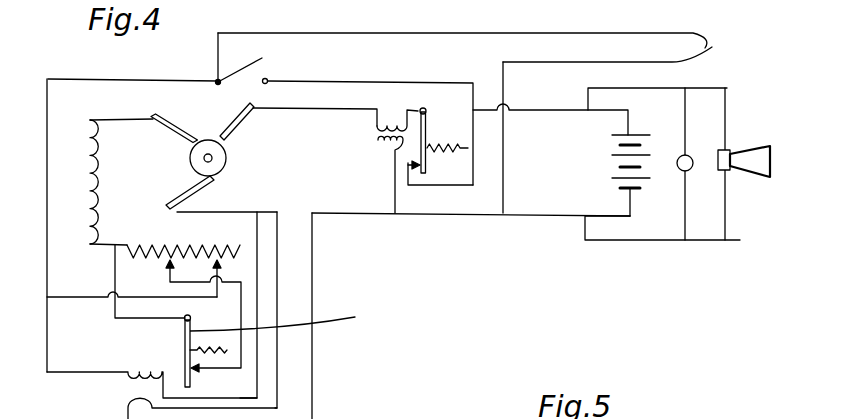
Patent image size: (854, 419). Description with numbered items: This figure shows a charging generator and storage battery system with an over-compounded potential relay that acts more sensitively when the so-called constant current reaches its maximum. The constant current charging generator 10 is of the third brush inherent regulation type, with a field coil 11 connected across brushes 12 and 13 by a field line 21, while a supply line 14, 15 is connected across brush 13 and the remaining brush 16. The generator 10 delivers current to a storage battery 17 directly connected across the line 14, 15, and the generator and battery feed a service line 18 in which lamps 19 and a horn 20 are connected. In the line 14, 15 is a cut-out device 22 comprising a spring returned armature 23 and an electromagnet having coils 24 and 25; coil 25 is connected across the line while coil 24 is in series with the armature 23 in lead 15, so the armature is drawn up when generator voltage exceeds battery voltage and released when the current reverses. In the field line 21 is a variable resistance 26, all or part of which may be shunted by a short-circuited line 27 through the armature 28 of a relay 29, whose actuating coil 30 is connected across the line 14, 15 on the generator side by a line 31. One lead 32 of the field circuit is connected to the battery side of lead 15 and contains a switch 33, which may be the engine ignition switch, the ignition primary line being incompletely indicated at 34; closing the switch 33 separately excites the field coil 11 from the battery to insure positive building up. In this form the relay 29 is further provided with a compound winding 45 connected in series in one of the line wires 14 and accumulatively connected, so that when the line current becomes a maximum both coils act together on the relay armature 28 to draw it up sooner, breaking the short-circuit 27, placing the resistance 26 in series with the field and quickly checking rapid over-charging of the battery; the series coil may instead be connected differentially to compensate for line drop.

The charging generator 10 is at (226, 160).
The field coil 11 is at (100, 155).
The brush 12 is at (170, 122).
The brush 13 is at (238, 124).
The supply line 14 is at (422, 214).
The supply line 15 is at (348, 113).
The brush 16 is at (197, 190).
The storage battery 17 is at (615, 155).
The service line 18 is at (643, 90).
The lamps 19 is at (695, 153).
The horn 20 is at (757, 157).
The field line 21 is at (97, 244).
The cut-out device 22 is at (410, 133).
The armature 23 is at (418, 172).
The coil 24 is at (397, 120).
The coil 25 is at (378, 140).
The variable resistance 26 is at (192, 248).
The short-circuited line 27 is at (115, 277).
The armature 28 is at (286, 316).
The relay 29 is at (175, 365).
The actuating coil 30 is at (163, 372).
The line 31 is at (47, 333).
The lead 32 is at (162, 78).
The switch 33 is at (250, 65).
The ignition primary line 34 is at (482, 45).
The compound winding 45 is at (130, 403).